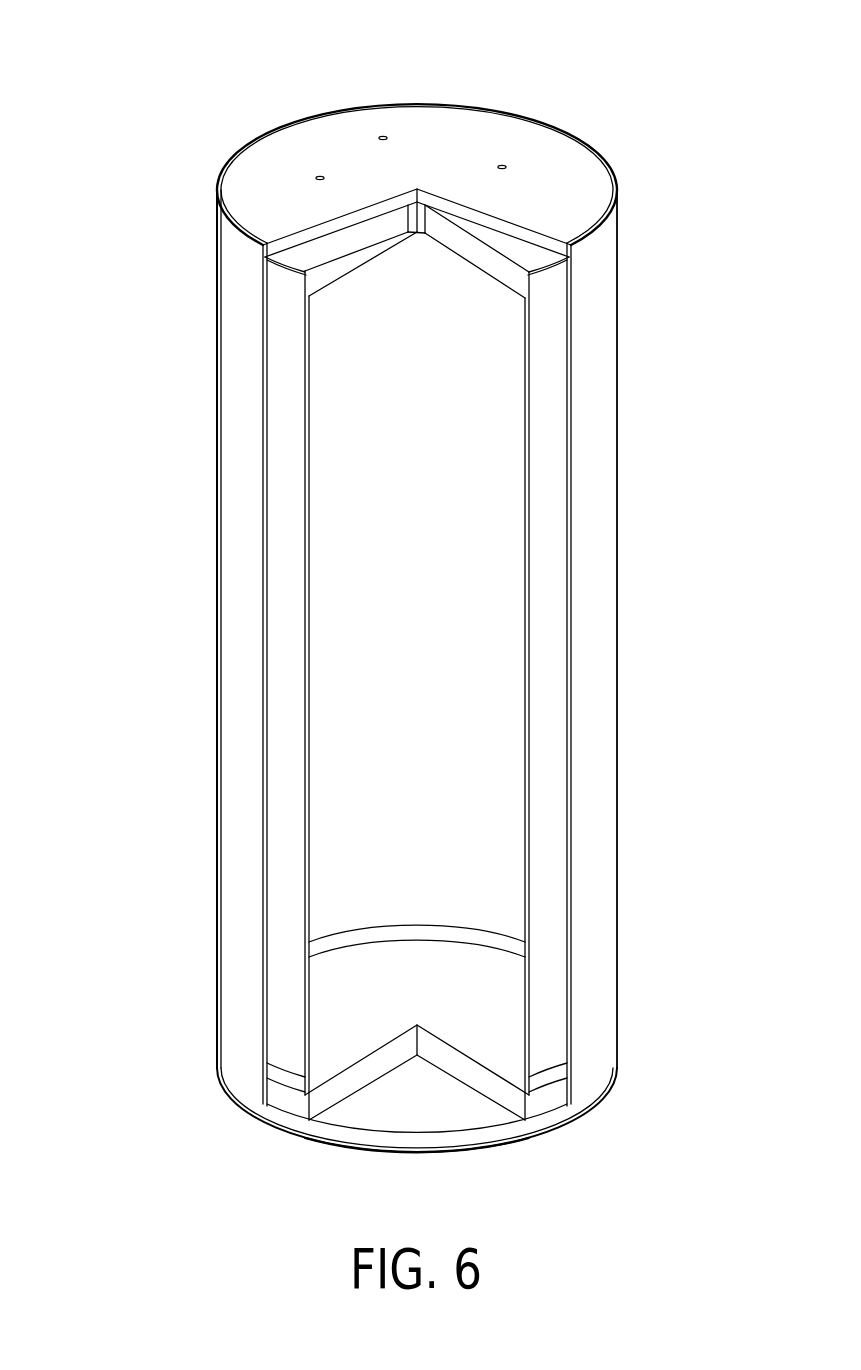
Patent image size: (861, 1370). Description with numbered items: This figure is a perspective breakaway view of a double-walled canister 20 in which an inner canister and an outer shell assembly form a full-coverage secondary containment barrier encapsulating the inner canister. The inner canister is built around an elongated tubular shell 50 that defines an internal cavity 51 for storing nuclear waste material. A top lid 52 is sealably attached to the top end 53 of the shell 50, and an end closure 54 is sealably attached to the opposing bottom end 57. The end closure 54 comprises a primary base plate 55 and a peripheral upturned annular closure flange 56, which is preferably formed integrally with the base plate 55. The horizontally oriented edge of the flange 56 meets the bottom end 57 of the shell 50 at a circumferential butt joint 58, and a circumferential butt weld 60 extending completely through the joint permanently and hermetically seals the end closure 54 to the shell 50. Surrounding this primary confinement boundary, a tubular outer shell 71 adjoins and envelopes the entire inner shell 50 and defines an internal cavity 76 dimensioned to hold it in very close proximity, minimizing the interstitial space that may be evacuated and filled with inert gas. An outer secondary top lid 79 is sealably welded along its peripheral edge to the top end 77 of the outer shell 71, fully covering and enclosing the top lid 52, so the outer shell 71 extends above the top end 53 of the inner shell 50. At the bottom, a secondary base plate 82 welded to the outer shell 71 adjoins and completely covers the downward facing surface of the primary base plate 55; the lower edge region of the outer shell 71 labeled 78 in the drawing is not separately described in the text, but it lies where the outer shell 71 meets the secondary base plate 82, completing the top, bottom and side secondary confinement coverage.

The canister 20 is at (110, 104).
The tubular shell 50 is at (529, 345).
The internal cavity 51 is at (311, 577).
The top lid 52 is at (526, 260).
The top end 53 is at (291, 252).
The end closure 54 is at (545, 1137).
The primary base plate 55 is at (507, 1093).
The peripheral upturned annular closure flange 56 is at (277, 1076).
The bottom end 57 is at (291, 1052).
The butt joint 58 is at (482, 926).
The butt weld 60 is at (548, 1062).
The outer shell 71 is at (618, 657).
The internal cavity 76 is at (265, 715).
The top end 77 is at (236, 228).
The bottom edge 78 is at (241, 1105).
The outer secondary top lid 79 is at (540, 146).
The secondary base plate 82 is at (376, 1113).